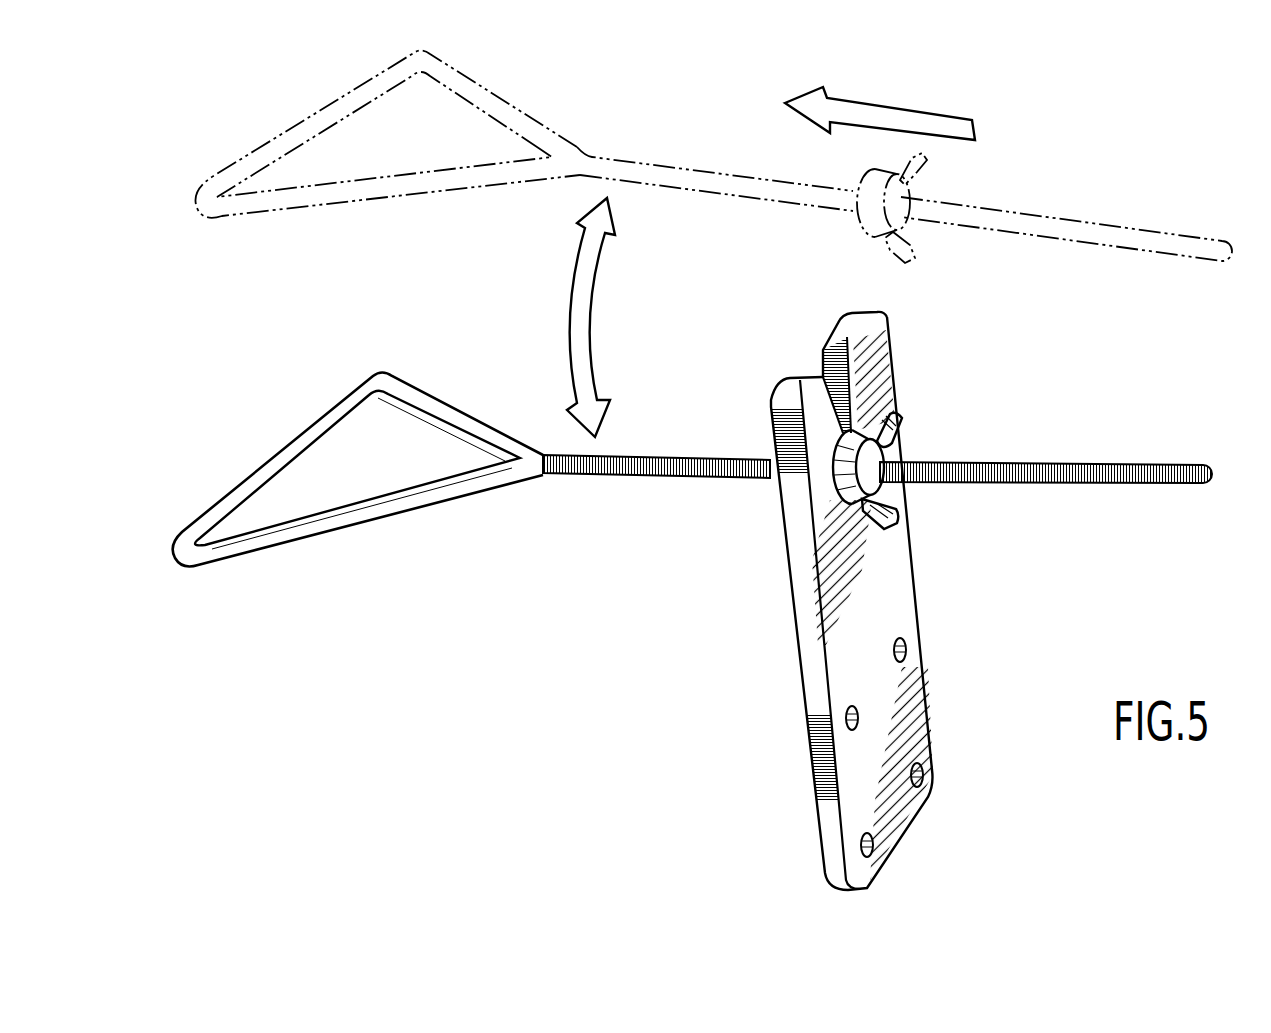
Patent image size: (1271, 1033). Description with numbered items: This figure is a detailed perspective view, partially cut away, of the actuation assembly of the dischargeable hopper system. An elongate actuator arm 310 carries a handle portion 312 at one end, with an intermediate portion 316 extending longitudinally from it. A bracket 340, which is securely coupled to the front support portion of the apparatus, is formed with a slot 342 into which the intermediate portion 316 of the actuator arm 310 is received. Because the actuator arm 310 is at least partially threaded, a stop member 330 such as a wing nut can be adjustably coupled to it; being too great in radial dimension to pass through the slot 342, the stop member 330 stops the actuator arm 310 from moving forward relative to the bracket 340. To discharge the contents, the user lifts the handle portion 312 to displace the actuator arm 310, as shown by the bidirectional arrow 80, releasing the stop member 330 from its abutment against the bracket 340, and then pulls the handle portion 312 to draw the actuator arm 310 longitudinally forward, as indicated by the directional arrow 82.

The bidirectional arrow 80 is at (578, 315).
The directional arrow 82 is at (890, 116).
The actuator arm 310 is at (684, 474).
The handle portion 312 is at (308, 530).
The intermediate portion 316 is at (1047, 484).
The stop member 330 is at (893, 450).
The bracket 340 is at (903, 590).
The slot 342 is at (827, 350).